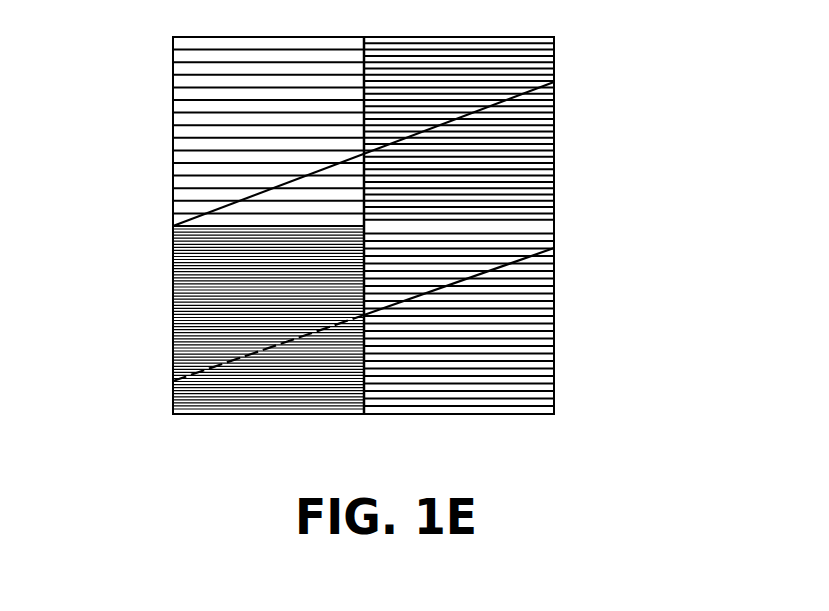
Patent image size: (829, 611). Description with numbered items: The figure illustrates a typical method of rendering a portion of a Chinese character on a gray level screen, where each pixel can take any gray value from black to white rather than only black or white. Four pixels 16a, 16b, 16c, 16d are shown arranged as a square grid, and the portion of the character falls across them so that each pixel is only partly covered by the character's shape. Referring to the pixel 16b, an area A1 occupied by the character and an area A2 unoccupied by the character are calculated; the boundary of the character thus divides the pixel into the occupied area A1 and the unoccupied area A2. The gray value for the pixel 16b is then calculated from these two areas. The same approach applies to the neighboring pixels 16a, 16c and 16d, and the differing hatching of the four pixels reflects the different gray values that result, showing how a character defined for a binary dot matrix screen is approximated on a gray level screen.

The pixel 16a is at (528, 133).
The pixel 16b is at (532, 290).
The pixel 16c is at (215, 305).
The pixel 16d is at (220, 75).
The area occupied by the character A1 is at (450, 253).
The area unoccupied by the character A2 is at (520, 383).